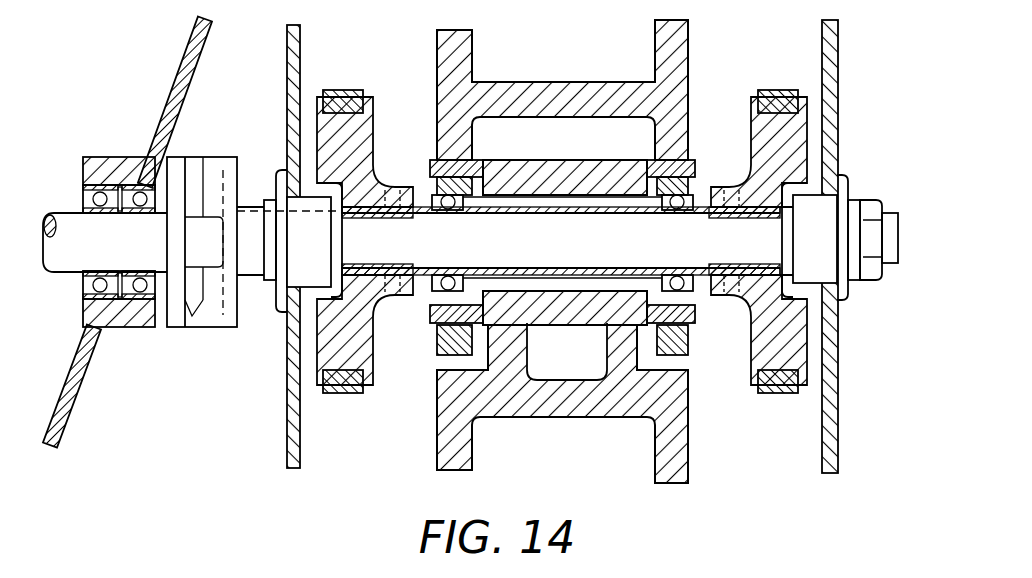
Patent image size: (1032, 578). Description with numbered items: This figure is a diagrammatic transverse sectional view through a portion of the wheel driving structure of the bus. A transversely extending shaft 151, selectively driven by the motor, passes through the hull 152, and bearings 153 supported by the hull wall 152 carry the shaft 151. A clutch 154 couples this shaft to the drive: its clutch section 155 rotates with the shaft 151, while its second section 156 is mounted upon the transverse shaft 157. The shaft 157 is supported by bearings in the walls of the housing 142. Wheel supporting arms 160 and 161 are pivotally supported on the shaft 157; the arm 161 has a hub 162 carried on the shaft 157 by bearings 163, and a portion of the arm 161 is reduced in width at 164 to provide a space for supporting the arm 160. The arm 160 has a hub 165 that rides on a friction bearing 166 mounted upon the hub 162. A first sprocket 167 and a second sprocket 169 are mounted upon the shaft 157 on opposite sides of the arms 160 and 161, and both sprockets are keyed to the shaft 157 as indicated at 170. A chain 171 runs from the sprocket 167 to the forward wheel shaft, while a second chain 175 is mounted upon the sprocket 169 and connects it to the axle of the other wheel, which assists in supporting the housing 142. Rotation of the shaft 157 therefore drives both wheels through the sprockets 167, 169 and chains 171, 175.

The housing 142 is at (866, 246).
The shaft 151 is at (67, 220).
The hull 152 is at (186, 68).
The bearings 153 is at (105, 186).
The clutch 154 is at (182, 148).
The clutch section 155 is at (181, 318).
The second section 156 is at (220, 328).
The transverse shaft 157 is at (528, 254).
The wheel supporting arm 160 is at (590, 82).
The wheel supporting arm 161 is at (580, 410).
The hub 162 is at (622, 167).
The bearings 163 is at (486, 200).
The reduced width portion 164 is at (510, 347).
The hub 165 is at (450, 148).
The friction bearing 166 is at (432, 168).
The first sprocket 167 is at (362, 127).
The second sprocket 169 is at (795, 125).
The key 170 is at (368, 219).
The chain 171 is at (343, 90).
The second chain 175 is at (777, 90).